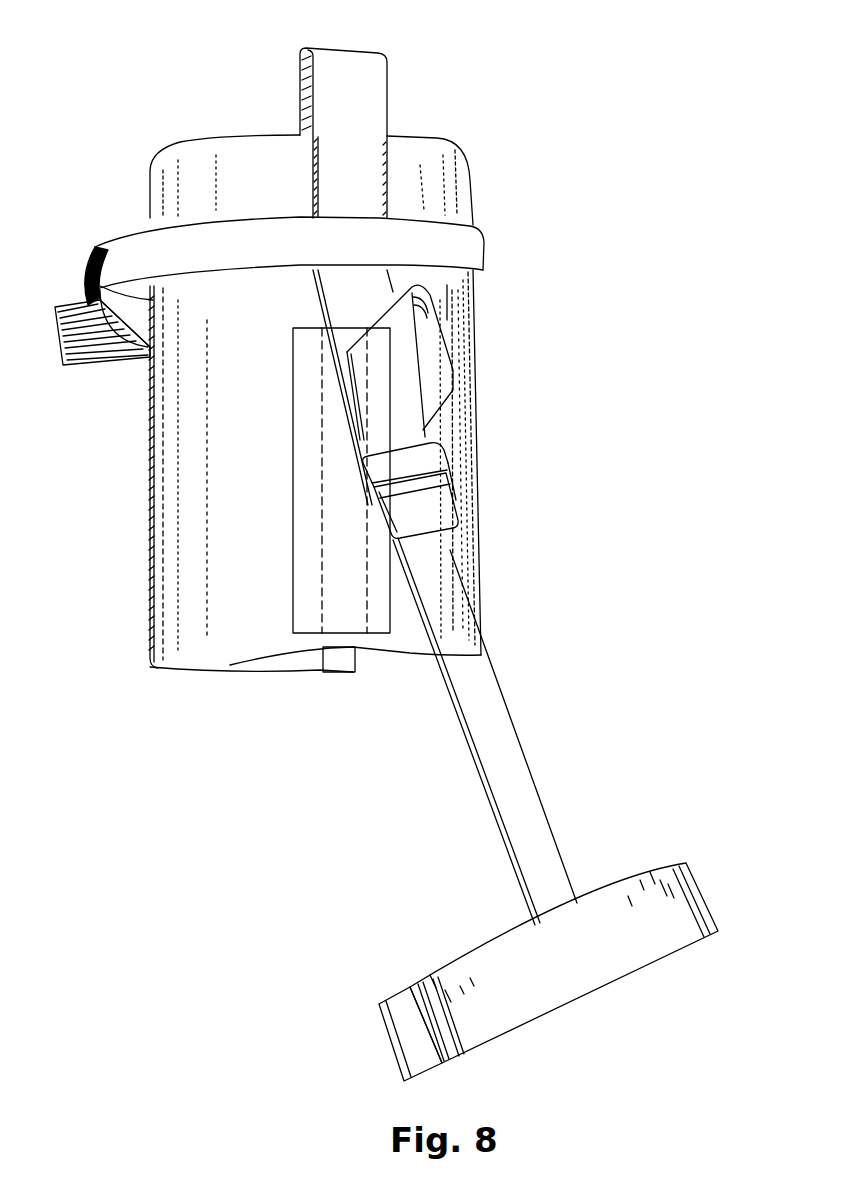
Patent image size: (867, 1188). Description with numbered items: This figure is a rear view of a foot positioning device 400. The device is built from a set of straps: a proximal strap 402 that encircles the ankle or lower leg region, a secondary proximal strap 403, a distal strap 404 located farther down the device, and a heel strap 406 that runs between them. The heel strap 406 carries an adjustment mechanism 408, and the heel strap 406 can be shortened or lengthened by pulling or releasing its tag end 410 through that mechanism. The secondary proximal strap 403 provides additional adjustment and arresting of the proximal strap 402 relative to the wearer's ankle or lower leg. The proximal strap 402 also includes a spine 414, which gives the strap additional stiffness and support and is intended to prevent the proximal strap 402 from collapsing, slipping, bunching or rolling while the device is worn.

The foot positioning device 400 is at (136, 116).
The proximal strap 402 is at (190, 557).
The secondary proximal strap 403 is at (118, 252).
The distal strap 404 is at (493, 977).
The heel strap 406 is at (527, 802).
The adjustment mechanism 408 is at (475, 492).
The tag end 410 is at (432, 347).
The spine 414 is at (336, 588).